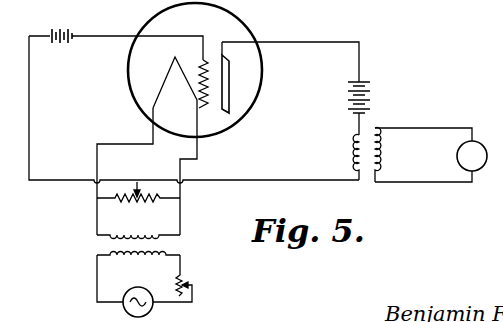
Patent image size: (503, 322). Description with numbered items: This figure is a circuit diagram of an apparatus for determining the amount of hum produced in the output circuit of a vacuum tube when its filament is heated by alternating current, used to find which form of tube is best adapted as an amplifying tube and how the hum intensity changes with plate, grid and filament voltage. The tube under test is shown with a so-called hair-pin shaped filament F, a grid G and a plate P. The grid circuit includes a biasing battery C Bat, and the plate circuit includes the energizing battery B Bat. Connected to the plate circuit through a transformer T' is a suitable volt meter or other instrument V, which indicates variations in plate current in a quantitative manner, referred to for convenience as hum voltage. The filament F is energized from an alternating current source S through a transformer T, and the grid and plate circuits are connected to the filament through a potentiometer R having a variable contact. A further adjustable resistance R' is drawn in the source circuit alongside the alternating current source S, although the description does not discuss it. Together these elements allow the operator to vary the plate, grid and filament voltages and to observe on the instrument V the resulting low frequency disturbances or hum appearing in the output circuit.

The filament F is at (168, 72).
The grid G is at (208, 62).
The plate P is at (229, 78).
The biasing battery C Bat is at (71, 24).
The energizing battery B Bat is at (388, 101).
The transformer T' is at (367, 170).
The volt meter V is at (431, 155).
The potentiometer R is at (138, 202).
The transformer T is at (149, 245).
The rheostat in source circuit R' is at (197, 275).
The alternating current source S is at (150, 312).